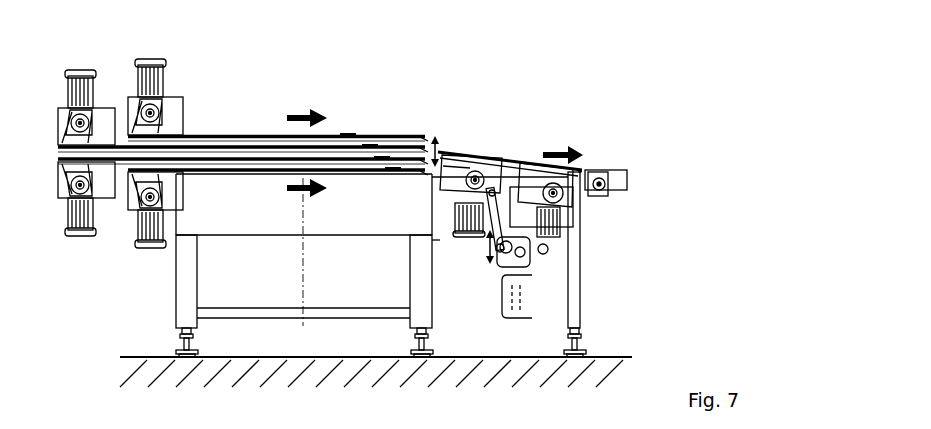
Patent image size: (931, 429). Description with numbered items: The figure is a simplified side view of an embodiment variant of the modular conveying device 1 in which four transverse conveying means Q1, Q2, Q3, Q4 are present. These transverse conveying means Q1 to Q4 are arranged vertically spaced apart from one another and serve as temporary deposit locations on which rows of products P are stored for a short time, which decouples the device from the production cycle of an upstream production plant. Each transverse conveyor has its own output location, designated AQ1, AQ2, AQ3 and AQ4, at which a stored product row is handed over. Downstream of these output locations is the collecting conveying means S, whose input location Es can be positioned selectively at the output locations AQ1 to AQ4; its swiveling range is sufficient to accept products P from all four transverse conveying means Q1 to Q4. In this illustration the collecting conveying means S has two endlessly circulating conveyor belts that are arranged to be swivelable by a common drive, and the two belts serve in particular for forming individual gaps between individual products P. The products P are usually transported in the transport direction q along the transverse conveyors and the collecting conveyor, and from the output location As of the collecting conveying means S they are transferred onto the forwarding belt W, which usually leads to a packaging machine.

The modular conveying device 1 is at (658, 94).
The transverse conveying means Q1 is at (213, 158).
The transverse conveying means Q2 is at (186, 168).
The transverse conveying means Q3 is at (196, 148).
The transverse conveying means Q4 is at (197, 136).
The products P is at (348, 133).
The transport direction q is at (435, 154).
The output location of transverse conveying means Q1 AQ1 is at (424, 174).
The output location of transverse conveying means Q2 AQ2 is at (421, 164).
The output location of transverse conveying means Q3 AQ3 is at (427, 143).
The output location of transverse conveying means Q4 AQ4 is at (422, 134).
The input location of collecting conveying means Es is at (430, 146).
The collecting conveying means S is at (520, 198).
The output location of collecting conveying means As is at (582, 170).
The forwarding belt W is at (603, 172).